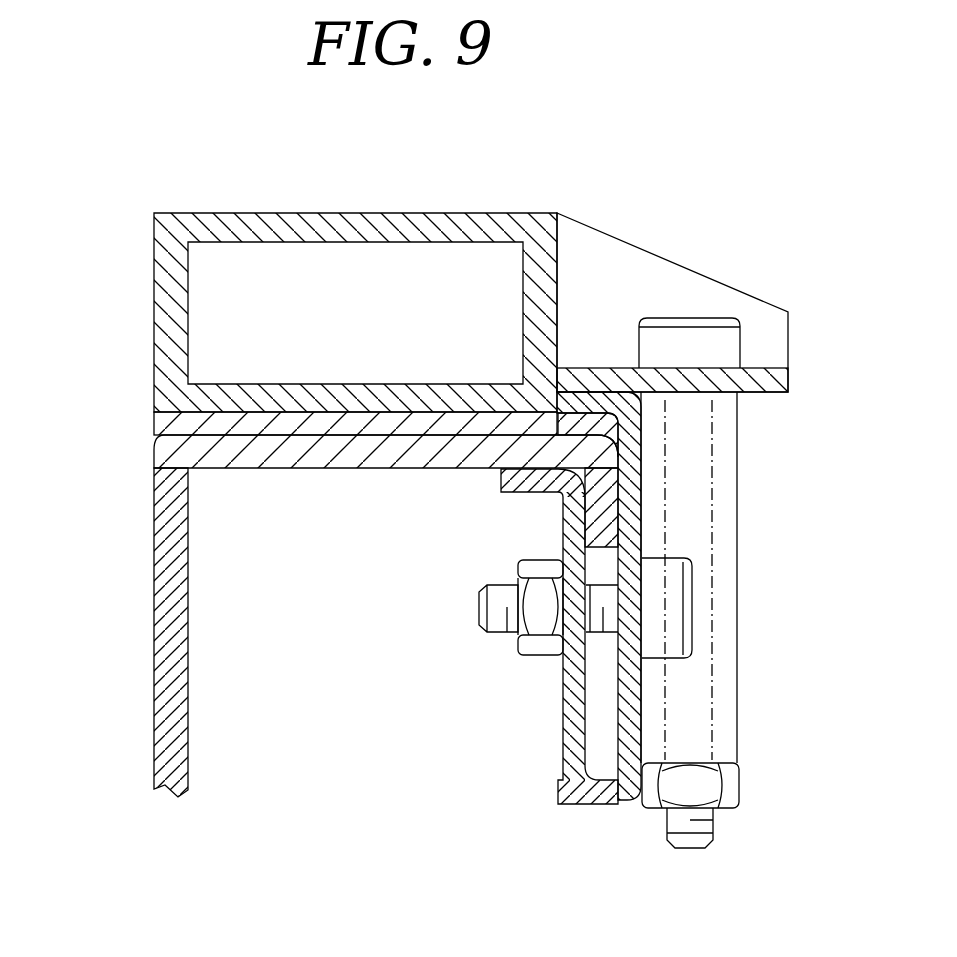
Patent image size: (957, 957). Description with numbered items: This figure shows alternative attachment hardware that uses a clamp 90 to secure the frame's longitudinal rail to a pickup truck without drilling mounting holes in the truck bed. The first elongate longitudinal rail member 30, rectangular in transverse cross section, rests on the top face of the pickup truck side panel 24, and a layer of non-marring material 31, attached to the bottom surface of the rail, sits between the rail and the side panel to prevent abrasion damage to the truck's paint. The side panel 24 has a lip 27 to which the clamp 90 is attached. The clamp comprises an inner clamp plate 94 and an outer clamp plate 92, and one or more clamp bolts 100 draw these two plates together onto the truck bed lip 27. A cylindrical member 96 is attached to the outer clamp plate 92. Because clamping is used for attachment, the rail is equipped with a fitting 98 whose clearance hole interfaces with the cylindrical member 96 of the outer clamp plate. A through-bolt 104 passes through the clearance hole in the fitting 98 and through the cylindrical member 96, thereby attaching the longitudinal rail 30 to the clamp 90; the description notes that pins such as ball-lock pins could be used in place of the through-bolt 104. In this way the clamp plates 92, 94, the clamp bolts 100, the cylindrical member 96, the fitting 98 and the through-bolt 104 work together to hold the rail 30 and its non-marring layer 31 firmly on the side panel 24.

The pickup truck side panel 24 is at (153, 545).
The lip 27 is at (603, 547).
The first elongate longitudinal rail member 30 is at (238, 212).
The layer of non-marring material 31 is at (153, 425).
The clamp 90 is at (611, 653).
The outer clamp plate 92 is at (645, 680).
The inner clamp plate 94 is at (562, 715).
The cylindrical member 96 is at (737, 469).
The fitting 98 is at (647, 250).
The clamp bolt 100 is at (517, 640).
The through-bolt 104 is at (693, 318).